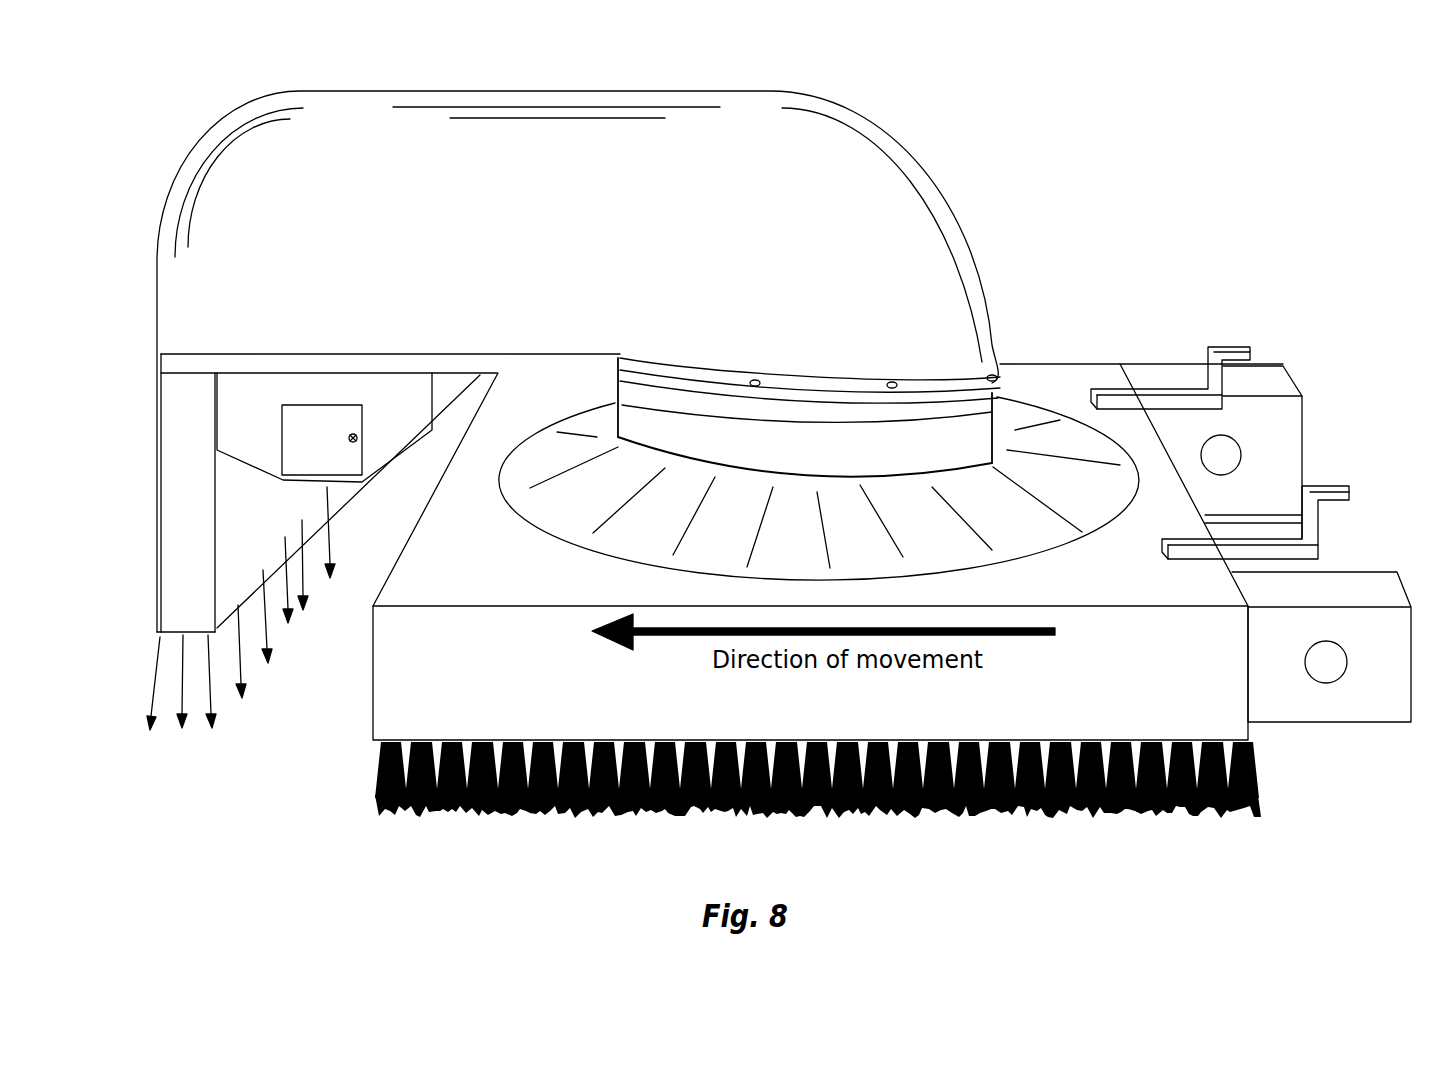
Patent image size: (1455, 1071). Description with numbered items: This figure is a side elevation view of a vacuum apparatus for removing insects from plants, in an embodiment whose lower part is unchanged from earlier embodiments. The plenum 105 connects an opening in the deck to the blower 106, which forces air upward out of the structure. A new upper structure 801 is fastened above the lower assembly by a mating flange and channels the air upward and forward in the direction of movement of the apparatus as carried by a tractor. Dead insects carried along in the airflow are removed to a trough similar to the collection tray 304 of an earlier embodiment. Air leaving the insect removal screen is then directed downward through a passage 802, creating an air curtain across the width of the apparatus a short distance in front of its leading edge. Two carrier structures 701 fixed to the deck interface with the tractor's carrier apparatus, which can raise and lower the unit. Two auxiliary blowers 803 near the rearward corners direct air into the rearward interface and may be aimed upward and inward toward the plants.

The upper structure 801 is at (831, 126).
The passage 802 is at (185, 507).
The collection tray 304 is at (384, 390).
The plenum 105 is at (1018, 413).
The blower 106 is at (617, 418).
The carrier structures 701 is at (1225, 347).
The auxiliary blowers 803 is at (1265, 382).